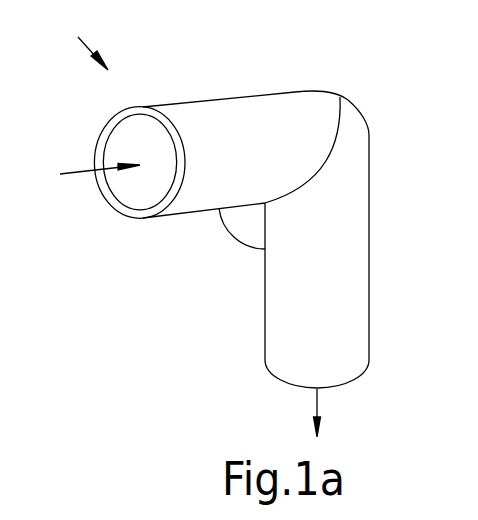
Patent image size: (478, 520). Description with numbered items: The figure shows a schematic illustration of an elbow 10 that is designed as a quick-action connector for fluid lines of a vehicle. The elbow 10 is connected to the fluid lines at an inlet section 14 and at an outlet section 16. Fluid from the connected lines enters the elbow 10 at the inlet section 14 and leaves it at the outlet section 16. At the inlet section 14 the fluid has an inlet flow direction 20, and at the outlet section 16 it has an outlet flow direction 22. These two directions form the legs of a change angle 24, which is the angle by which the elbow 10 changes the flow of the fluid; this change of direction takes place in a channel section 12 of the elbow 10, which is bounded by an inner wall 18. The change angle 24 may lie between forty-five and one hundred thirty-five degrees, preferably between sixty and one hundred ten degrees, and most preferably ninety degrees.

The elbow 10 is at (79, 35).
The channel section 12 is at (323, 105).
The inlet section 14 is at (188, 115).
The outlet section 16 is at (357, 337).
The inner wall 18 is at (123, 140).
The inlet flow direction 20 is at (77, 175).
The outlet flow direction 22 is at (318, 407).
The change angle 24 is at (240, 227).